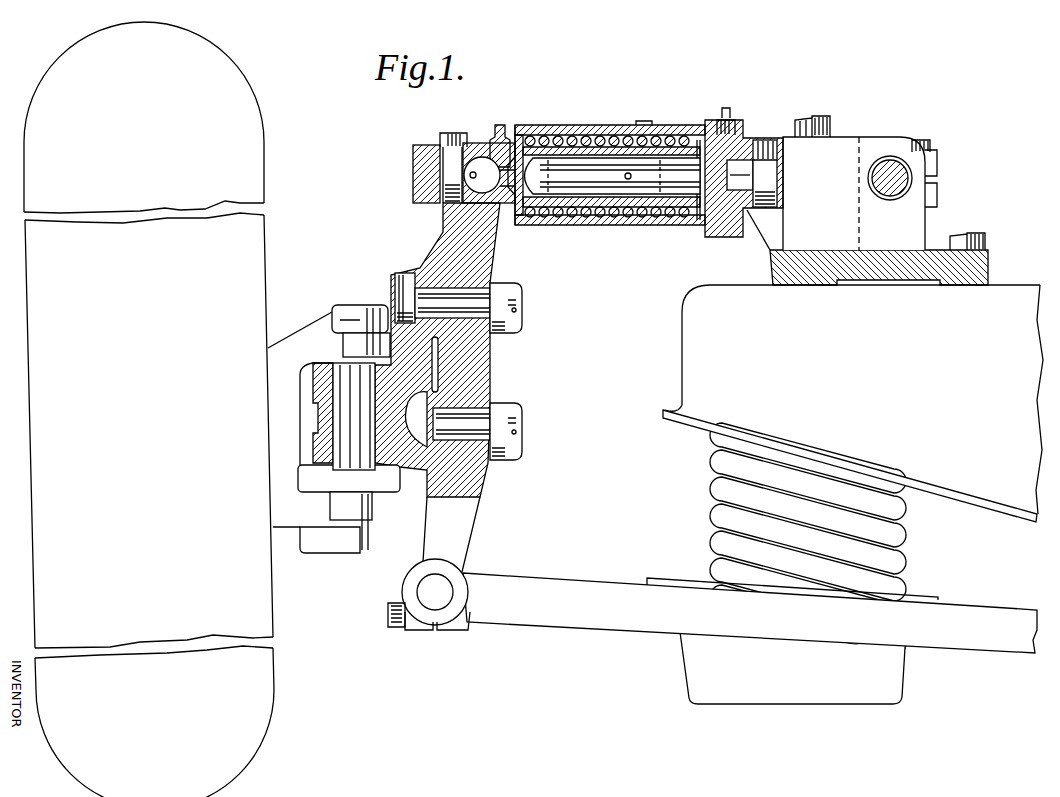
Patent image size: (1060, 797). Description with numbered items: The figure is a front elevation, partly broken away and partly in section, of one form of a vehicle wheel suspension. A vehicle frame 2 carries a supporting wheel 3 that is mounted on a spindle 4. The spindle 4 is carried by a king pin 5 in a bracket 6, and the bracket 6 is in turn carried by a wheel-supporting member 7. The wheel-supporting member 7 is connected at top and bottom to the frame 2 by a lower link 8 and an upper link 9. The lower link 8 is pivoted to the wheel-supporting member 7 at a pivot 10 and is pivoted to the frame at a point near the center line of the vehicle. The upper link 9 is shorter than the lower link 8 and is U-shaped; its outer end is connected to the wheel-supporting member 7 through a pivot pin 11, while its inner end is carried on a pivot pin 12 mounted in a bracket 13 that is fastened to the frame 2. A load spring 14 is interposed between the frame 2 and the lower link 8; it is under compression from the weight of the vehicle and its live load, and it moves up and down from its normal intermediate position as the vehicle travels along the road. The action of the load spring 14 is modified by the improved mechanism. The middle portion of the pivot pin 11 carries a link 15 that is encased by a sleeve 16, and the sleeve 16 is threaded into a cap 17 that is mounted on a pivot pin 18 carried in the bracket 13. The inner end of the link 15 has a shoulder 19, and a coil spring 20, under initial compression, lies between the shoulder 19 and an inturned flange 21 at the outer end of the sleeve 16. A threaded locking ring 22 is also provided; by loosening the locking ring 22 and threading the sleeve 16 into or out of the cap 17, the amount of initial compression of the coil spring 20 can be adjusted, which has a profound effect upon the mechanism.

The vehicle frame 2 is at (697, 340).
The supporting wheel 3 is at (30, 398).
The spindle 4 is at (315, 338).
The king pin 5 is at (397, 470).
The bracket 6 is at (420, 266).
The wheel-supporting member 7 is at (446, 238).
The lower link 8 is at (613, 628).
The upper link 9 is at (938, 163).
The pivot 10 is at (437, 592).
The pivot pin 11 is at (480, 150).
The pivot pin 12 is at (892, 166).
The bracket 13 is at (822, 160).
The load spring 14 is at (730, 513).
The link 15 is at (507, 210).
The sleeve 16 is at (557, 127).
The cap 17 is at (678, 112).
The pivot pin 18 is at (746, 160).
The shoulder 19 is at (700, 236).
The coil spring 20 is at (590, 226).
The inturned flange 21 is at (522, 132).
The threaded locking ring 22 is at (642, 123).